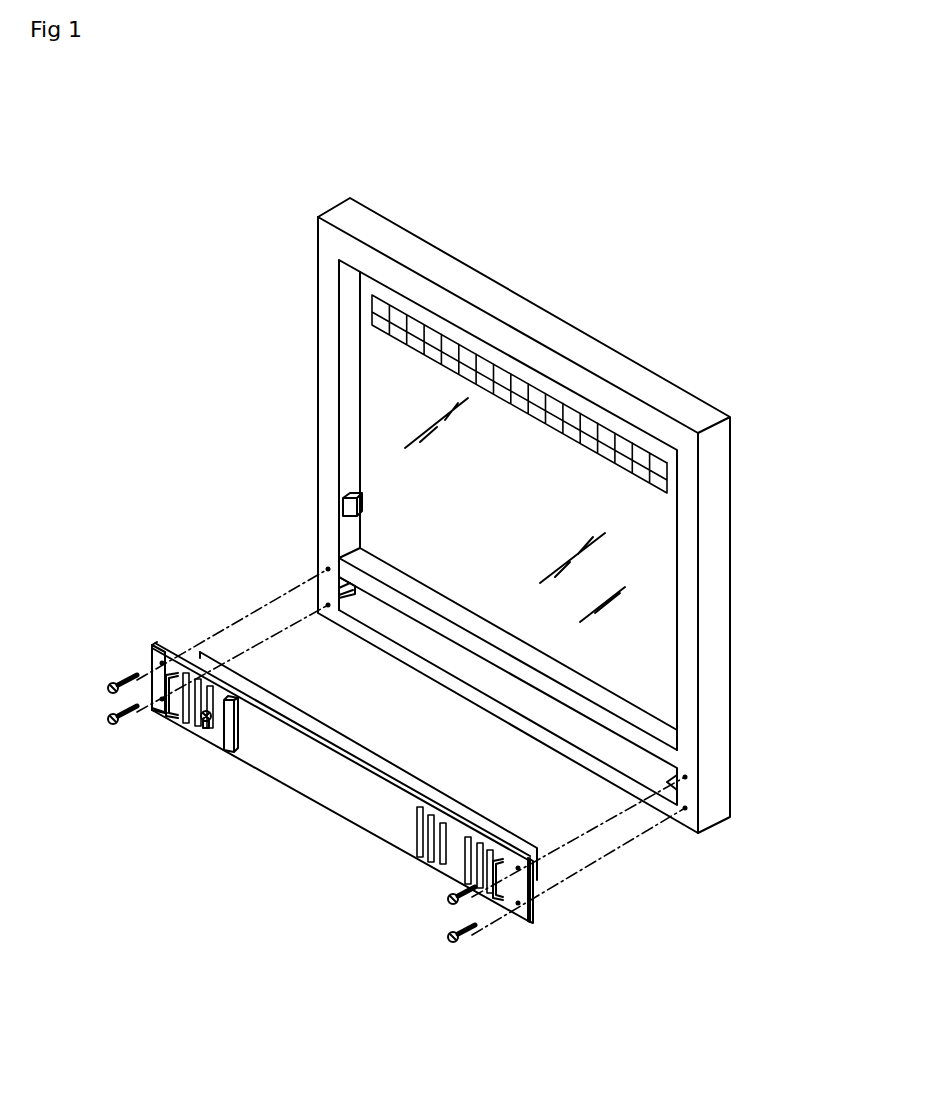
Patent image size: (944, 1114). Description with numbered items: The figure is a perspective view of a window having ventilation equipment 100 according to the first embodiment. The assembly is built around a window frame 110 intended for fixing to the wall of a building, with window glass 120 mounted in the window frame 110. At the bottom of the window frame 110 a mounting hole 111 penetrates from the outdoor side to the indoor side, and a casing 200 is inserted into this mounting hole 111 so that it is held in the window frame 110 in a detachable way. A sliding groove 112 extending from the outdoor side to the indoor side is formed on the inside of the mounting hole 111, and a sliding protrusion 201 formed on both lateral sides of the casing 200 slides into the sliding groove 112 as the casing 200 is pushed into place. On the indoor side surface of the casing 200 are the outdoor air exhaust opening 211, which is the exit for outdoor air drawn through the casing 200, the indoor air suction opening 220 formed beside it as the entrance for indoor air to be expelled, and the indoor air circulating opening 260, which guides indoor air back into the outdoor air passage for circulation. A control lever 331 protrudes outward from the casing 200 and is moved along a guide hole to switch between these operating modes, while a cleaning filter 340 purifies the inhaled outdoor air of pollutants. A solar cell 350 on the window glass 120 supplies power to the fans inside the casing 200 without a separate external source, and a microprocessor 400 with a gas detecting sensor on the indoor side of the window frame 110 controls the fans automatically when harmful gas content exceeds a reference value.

The window having ventilation equipment 100 is at (585, 241).
The window frame 110 is at (716, 522).
The mounting hole 111 is at (642, 757).
The sliding groove 112 is at (330, 585).
The window glass 120 is at (655, 617).
The casing 200 is at (343, 807).
The sliding protrusion 201 is at (545, 852).
The outdoor air exhaust opening 211 is at (415, 850).
The indoor air suction opening 220 is at (465, 872).
The indoor air circulating opening 260 is at (172, 716).
The control lever 331 is at (205, 723).
The cleaning filter 340 is at (226, 750).
The solar cell 350 is at (607, 433).
The microprocessor 400 is at (336, 503).